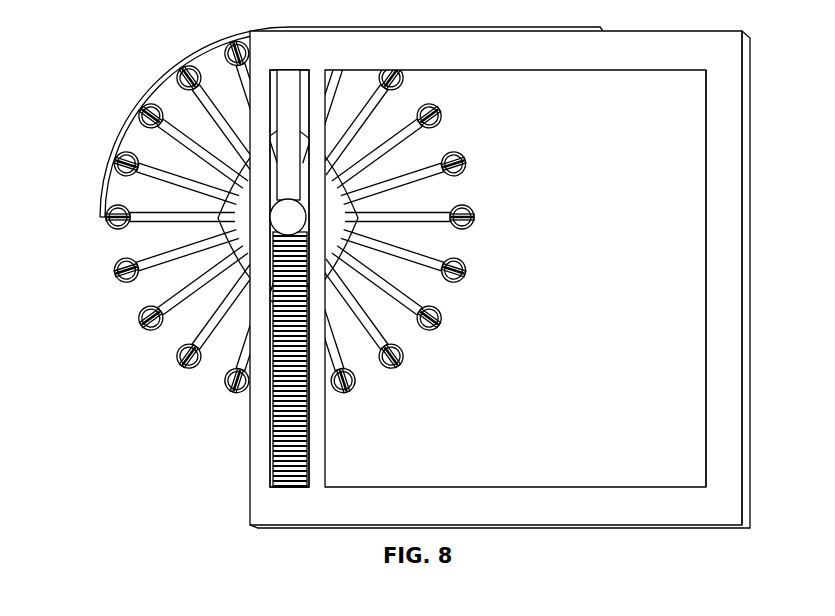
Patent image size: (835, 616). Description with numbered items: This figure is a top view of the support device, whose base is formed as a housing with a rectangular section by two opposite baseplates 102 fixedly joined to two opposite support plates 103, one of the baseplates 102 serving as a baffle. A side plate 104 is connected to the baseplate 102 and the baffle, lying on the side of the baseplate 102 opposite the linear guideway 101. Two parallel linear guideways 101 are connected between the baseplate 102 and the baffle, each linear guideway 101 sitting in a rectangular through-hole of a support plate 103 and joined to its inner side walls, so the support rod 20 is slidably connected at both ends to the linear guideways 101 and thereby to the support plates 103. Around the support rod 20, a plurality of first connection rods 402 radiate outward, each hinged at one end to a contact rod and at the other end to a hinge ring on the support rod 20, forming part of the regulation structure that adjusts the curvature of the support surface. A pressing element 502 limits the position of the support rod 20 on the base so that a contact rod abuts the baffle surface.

The support rod 20 is at (290, 213).
The linear guideway 101 is at (287, 138).
The baseplate 102 is at (655, 44).
The support plate 103 is at (263, 82).
The side plate 104 is at (714, 262).
The first connection rod 402 is at (163, 263).
The pressing element 502 is at (285, 436).